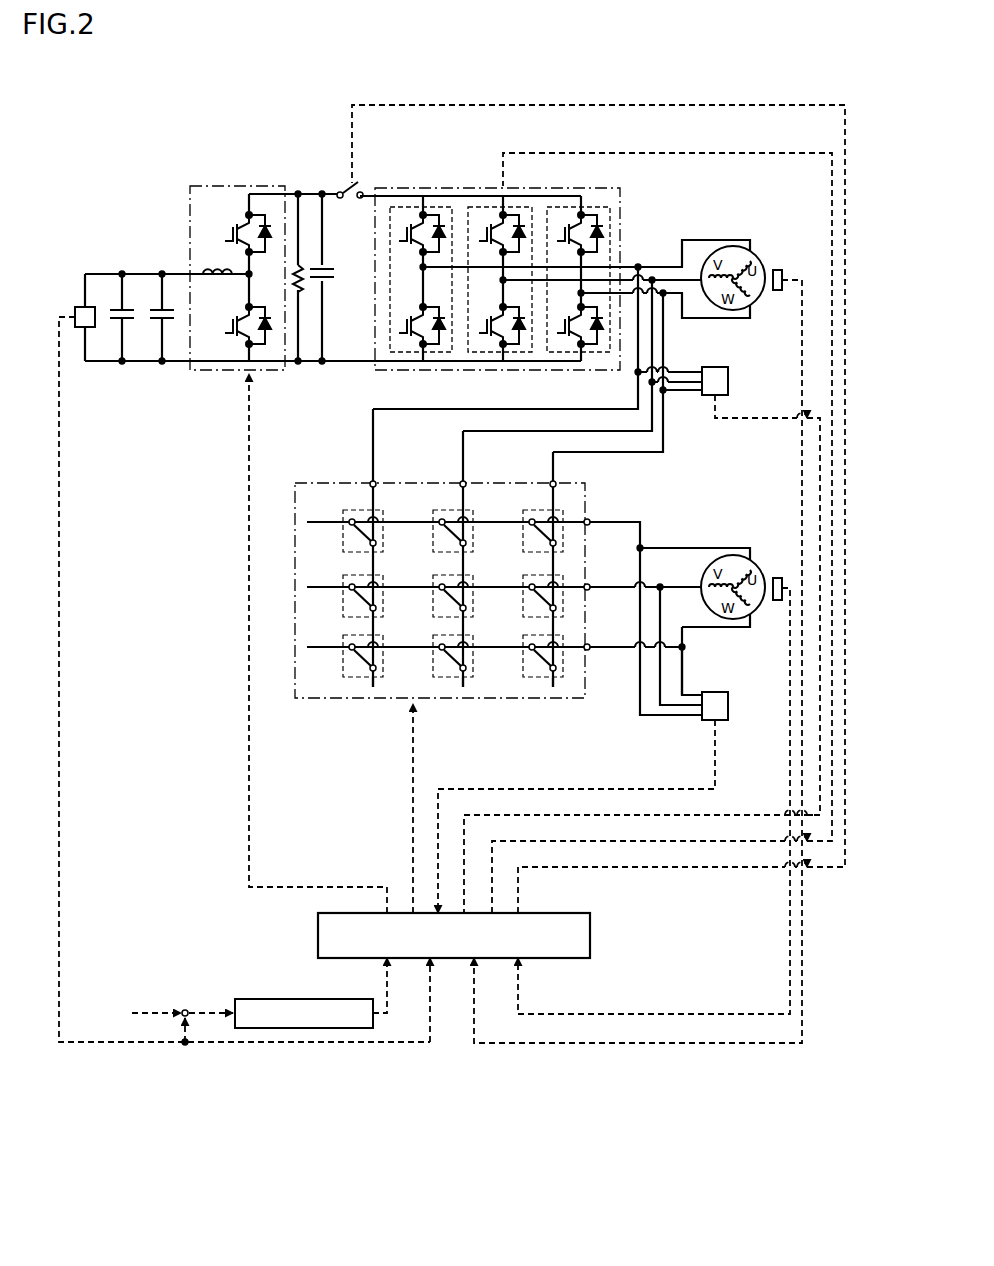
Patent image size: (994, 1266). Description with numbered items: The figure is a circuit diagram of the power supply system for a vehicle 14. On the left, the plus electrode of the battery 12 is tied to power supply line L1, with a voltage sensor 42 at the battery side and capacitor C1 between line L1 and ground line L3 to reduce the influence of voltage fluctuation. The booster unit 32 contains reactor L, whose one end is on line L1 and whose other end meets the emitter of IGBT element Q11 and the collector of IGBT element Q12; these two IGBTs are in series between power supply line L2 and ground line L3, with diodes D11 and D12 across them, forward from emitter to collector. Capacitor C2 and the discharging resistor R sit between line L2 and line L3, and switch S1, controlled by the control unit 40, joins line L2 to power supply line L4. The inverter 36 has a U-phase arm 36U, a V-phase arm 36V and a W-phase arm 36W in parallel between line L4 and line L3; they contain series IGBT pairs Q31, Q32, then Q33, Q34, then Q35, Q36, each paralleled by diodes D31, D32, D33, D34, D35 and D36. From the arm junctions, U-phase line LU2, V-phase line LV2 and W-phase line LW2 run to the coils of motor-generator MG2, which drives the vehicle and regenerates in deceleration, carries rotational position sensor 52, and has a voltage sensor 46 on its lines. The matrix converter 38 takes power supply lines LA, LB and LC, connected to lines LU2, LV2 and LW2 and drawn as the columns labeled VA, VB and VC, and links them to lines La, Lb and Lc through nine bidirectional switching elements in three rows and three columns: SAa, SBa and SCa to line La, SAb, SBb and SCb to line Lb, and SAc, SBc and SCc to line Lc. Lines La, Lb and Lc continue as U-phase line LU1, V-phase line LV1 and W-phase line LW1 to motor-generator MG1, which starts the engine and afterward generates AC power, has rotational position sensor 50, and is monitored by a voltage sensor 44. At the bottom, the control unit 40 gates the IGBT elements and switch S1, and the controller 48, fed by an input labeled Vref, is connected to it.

The power supply system for a vehicle 14 is at (224, 90).
The voltage sensor 42 is at (80, 305).
The battery 12 is at (120, 335).
The capacitor C1 is at (158, 335).
The power supply line L1 is at (147, 272).
The booster unit 32 is at (190, 192).
The reactor L is at (212, 272).
The IGBT element Q11 is at (240, 212).
The diode D11 is at (266, 212).
The IGBT element Q12 is at (240, 346).
The diode D12 is at (266, 346).
The resistor R is at (292, 280).
The capacitor C2 is at (324, 292).
The power supply line L2 is at (301, 190).
The ground line L3 is at (326, 364).
The switch S1 is at (344, 204).
The power supply line L4 is at (366, 190).
The inverter 36 is at (620, 190).
The U-phase arm 36U is at (437, 207).
The V-phase arm 36V is at (520, 207).
The W-phase arm 36W is at (590, 207).
The IGBT element Q31 is at (412, 220).
The IGBT element Q32 is at (412, 338).
The IGBT element Q33 is at (491, 220).
The IGBT element Q34 is at (491, 338).
The IGBT element Q35 is at (569, 220).
The IGBT element Q36 is at (569, 338).
The diode D31 is at (444, 235).
The diode D32 is at (444, 327).
The diode D33 is at (524, 235).
The diode D34 is at (524, 327).
The diode D35 is at (600, 212).
The diode D36 is at (598, 346).
The U-phase line LU2 is at (645, 265).
The V-phase line LV2 is at (706, 291).
The W-phase line LW2 is at (672, 290).
The motor-generator MG2 is at (718, 247).
The rotational position sensor 52 is at (778, 291).
The voltage sensor 46 is at (728, 384).
The matrix converter 38 is at (590, 489).
The node VA is at (386, 548).
The node VB is at (476, 559).
The node VC is at (537, 567).
The bidirectional switching element SAa is at (350, 514).
The bidirectional switching element SBa is at (440, 514).
The bidirectional switching element SCa is at (530, 514).
The bidirectional switching element SAb is at (350, 579).
The bidirectional switching element SBb is at (440, 579).
The bidirectional switching element SCb is at (530, 579).
The bidirectional switching element SAc is at (350, 639).
The bidirectional switching element SBc is at (440, 639).
The bidirectional switching element SCc is at (530, 639).
The power supply line La is at (590, 522).
The power supply line Lb is at (590, 587).
The power supply line Lc is at (590, 647).
The power supply line LA is at (373, 690).
The power supply line LB is at (463, 690).
The power supply line LC is at (553, 690).
The U-phase line LU1 is at (680, 546).
The V-phase line LV1 is at (656, 583).
The W-phase line LW1 is at (685, 680).
The motor-generator MG1 is at (716, 556).
The rotational position sensor 50 is at (778, 601).
The voltage sensor 44 is at (728, 708).
The control unit 40 is at (590, 935).
The controller 48 is at (313, 1030).
The voltage command Vref is at (244, 681).